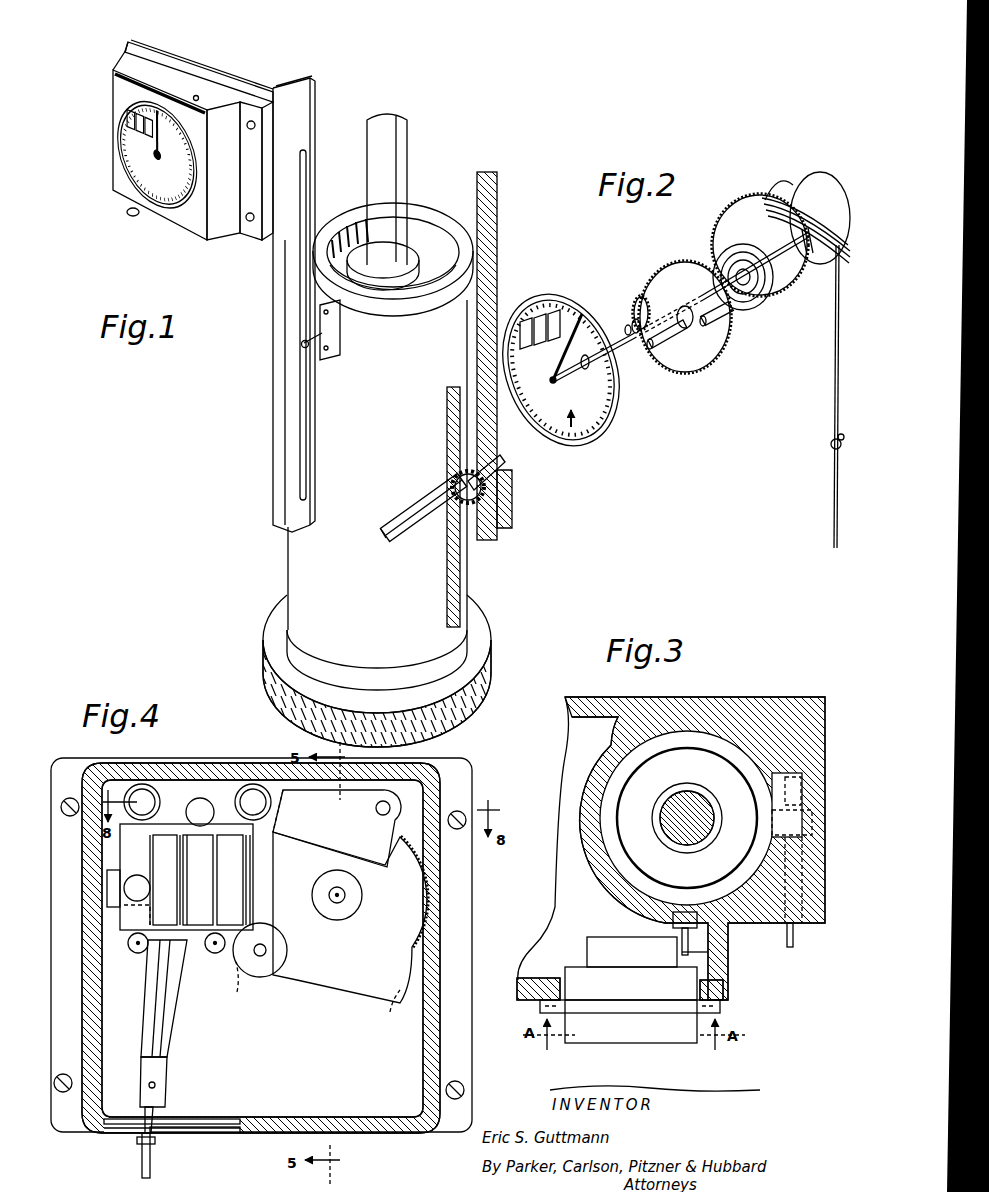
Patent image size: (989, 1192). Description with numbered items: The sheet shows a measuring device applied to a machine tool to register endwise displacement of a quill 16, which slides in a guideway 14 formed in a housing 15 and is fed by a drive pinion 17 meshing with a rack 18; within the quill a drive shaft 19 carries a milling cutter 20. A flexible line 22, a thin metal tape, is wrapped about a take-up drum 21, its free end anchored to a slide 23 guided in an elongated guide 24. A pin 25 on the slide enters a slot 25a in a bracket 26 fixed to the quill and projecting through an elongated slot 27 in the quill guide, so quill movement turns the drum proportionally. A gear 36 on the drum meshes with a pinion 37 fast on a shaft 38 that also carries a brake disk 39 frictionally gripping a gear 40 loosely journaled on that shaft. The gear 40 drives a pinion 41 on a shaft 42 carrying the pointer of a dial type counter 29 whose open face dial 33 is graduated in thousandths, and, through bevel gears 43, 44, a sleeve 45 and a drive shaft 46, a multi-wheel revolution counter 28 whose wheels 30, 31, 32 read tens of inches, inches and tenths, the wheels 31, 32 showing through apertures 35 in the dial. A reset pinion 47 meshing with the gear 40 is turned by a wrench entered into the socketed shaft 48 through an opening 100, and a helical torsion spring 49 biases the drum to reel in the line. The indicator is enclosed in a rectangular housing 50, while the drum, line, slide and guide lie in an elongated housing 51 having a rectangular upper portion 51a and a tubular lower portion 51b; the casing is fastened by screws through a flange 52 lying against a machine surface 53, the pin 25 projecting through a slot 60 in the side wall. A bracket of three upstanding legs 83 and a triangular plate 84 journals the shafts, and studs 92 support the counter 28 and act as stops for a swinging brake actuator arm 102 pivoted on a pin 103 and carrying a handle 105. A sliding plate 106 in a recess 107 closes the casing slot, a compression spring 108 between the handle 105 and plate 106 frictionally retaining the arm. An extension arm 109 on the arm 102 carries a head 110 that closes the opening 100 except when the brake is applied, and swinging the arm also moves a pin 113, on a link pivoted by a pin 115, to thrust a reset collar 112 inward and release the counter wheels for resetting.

In FIG. 1, the guideway 14 is at (466, 295).
In FIG. 3, the guideway 14 is at (650, 745).
In FIG. 1, the housing 15 is at (487, 252).
In FIG. 3, the housing 15 is at (771, 926).
In FIG. 1, the quill 16 is at (377, 465).
In FIG. 3, the quill 16 is at (603, 870).
In FIG. 1, the drive pinion 17 is at (488, 490).
In FIG. 3, the drive pinion 17 is at (772, 845).
In FIG. 1, the rack 18 is at (459, 552).
In FIG. 3, the rack 18 is at (777, 784).
In FIG. 1, the drive shaft 19 is at (407, 163).
In FIG. 3, the drive shaft 19 is at (699, 790).
In FIG. 1, the milling cutter 20 is at (262, 645).
In FIG. 2, the take-up drum 21 is at (815, 186).
In FIG. 2, the flexible line 22 is at (782, 180).
In FIG. 2, the slide 23 is at (832, 448).
In FIG. 2, the elongated guide 24 is at (834, 346).
In FIG. 1, the pin 25 is at (306, 349).
In FIG. 2, the pin 25 is at (838, 436).
In FIG. 3, the pin 25 is at (709, 953).
In FIG. 1, the slot 25a is at (323, 344).
In FIG. 1, the bracket 26 is at (341, 338).
In FIG. 3, the bracket 26 is at (690, 910).
In FIG. 3, the elongated slot 27 is at (675, 893).
In FIG. 1, the multi-wheel type revolution counter 28 is at (140, 138).
In FIG. 2, the multi-wheel type revolution counter 28 is at (553, 322).
In FIG. 4, the multi-wheel type revolution counter 28 is at (254, 902).
In FIG. 1, the dial type counter 29 is at (144, 163).
In FIG. 2, the dial type counter 29 is at (572, 430).
In FIG. 4, the wheel 30 is at (186, 877).
In FIG. 4, the wheel 31 is at (196, 877).
In FIG. 4, the wheel 32 is at (233, 877).
In FIG. 2, the open face dial 33 is at (598, 442).
In FIG. 1, the apertures 35 is at (130, 112).
In FIG. 2, the apertures 35 is at (540, 329).
In FIG. 1, the gear 36 is at (290, 563).
In FIG. 2, the gear 36 is at (719, 222).
In FIG. 2, the pinion 37 is at (815, 225).
In FIG. 2, the shaft 38 is at (770, 256).
In FIG. 4, the shaft 38 is at (345, 897).
In FIG. 2, the brake disk 39 is at (695, 270).
In FIG. 2, the gear 40 is at (640, 297).
In FIG. 4, the gear 40 is at (420, 890).
In FIG. 2, the pinion 41 is at (635, 318).
In FIG. 2, the shaft 42 is at (628, 326).
In FIG. 4, the shaft 42 is at (267, 952).
In FIG. 2, the bevel gear 43 is at (650, 350).
In FIG. 2, the bevel gear 44 is at (603, 374).
In FIG. 2, the sleeve 45 is at (660, 345).
In FIG. 2, the drive shaft 46 is at (585, 354).
In FIG. 2, the reset pinion 47 is at (736, 322).
In FIG. 2, the shaft 48 is at (722, 334).
In FIG. 2, the helical torsion spring 49 is at (758, 312).
In FIG. 1, the rectangular housing 50 is at (190, 233).
In FIG. 3, the rectangular housing 50 is at (570, 968).
In FIG. 4, the rectangular housing 50 is at (436, 848).
In FIG. 1, the elongated housing 51 is at (317, 128).
In FIG. 3, the elongated housing 51 is at (584, 948).
In FIG. 1, the upper portion 51a is at (292, 70).
In FIG. 3, the upper portion 51a is at (607, 946).
In FIG. 1, the lower portion 51b is at (284, 345).
In FIG. 1, the flange 52 is at (126, 46).
In FIG. 3, the flange 52 is at (540, 1007).
In FIG. 4, the flange 52 is at (74, 770).
In FIG. 3, the machine surface 53 is at (526, 979).
In FIG. 1, the slot 60 is at (306, 430).
In FIG. 4, the legs 83 is at (315, 996).
In FIG. 4, the triangular plate 84 is at (355, 976).
In FIG. 4, the studs 92 is at (137, 953).
In FIG. 1, the opening 100 is at (194, 96).
In FIG. 4, the swinging actuator arm 102 is at (172, 1038).
In FIG. 4, the pin 103 is at (255, 796).
In FIG. 1, the handle 105 is at (133, 216).
In FIG. 4, the handle 105 is at (141, 1165).
In FIG. 4, the sliding plate 106 is at (186, 1130).
In FIG. 4, the recess 107 is at (225, 1130).
In FIG. 4, the compression spring 108 is at (160, 1110).
In FIG. 4, the extension arm 109 is at (328, 814).
In FIG. 4, the head 110 is at (380, 816).
In FIG. 4, the reset collar 112 is at (142, 875).
In FIG. 4, the pin 113 is at (140, 918).
In FIG. 4, the pin 115 is at (150, 797).